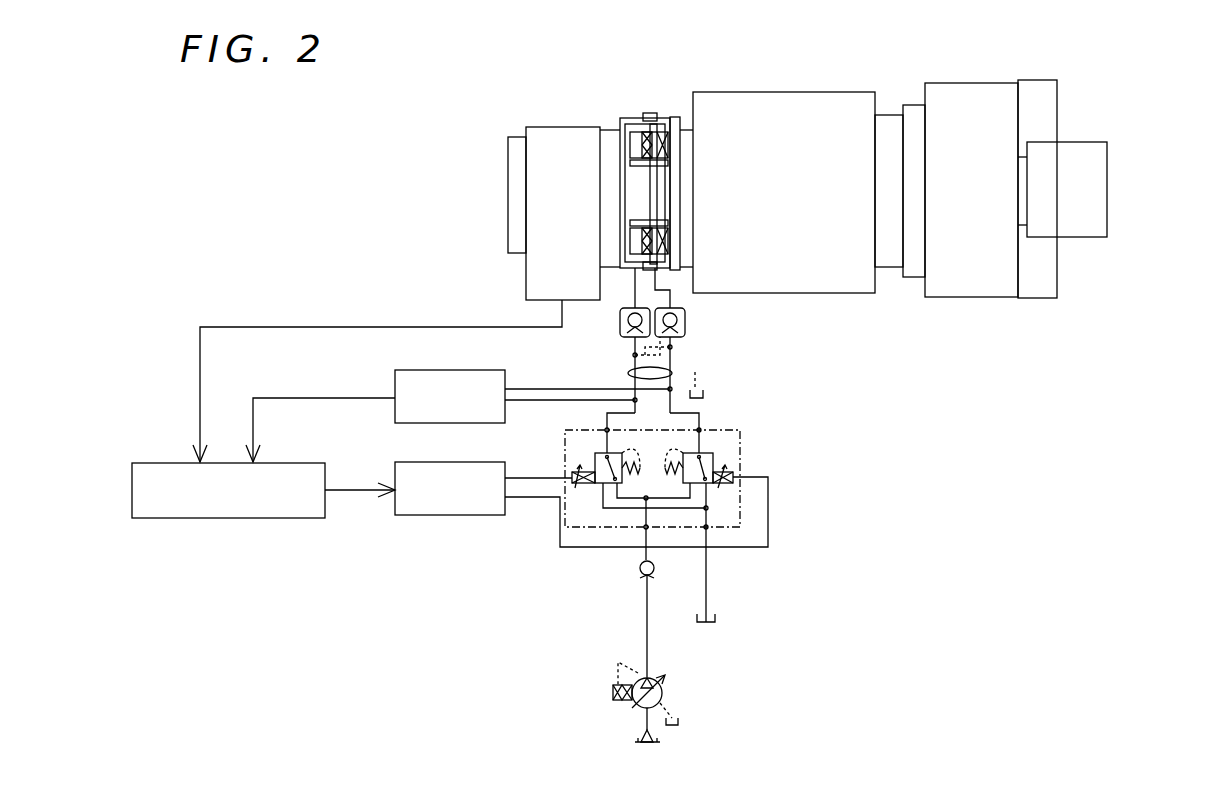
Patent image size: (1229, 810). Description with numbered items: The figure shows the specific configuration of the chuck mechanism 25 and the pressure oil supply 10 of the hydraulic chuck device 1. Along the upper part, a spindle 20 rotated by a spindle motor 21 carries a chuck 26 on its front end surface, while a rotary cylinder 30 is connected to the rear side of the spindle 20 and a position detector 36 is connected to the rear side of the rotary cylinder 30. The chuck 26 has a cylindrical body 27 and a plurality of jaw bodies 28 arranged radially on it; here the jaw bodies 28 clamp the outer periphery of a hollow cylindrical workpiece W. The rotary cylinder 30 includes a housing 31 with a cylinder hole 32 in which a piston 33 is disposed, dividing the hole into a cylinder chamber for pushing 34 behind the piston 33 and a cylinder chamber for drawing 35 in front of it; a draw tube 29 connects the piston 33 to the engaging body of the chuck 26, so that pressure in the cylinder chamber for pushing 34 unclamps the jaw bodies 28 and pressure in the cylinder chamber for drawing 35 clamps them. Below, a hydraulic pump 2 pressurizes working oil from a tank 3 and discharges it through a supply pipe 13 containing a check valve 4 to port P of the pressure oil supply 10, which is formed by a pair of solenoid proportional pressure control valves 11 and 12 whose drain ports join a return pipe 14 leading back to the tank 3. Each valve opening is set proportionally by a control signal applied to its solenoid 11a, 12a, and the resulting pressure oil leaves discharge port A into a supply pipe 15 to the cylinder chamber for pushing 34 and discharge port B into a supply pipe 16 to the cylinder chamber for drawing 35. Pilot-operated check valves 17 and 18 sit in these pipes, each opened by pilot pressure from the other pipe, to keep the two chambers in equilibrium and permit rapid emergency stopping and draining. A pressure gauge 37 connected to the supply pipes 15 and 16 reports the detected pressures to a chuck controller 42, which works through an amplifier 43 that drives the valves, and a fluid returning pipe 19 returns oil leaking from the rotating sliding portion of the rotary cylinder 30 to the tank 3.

The hydraulic chuck device 1 is at (277, 159).
The hydraulic pump 2 is at (663, 693).
The tank 3 is at (703, 395).
The check valve 4 is at (640, 568).
The pressure oil supply 10 is at (669, 486).
The solenoid proportional pressure control valve 11 is at (577, 483).
The solenoid 11a is at (580, 472).
The solenoid proportional pressure control valve 12 is at (740, 482).
The solenoid 12a is at (726, 472).
The supply pipe 13 is at (646, 608).
The return pipe 14 is at (706, 575).
The supply pipe 15 is at (626, 412).
The supply pipe 16 is at (675, 400).
The pilot-operated check valve 17 is at (620, 322).
The pilot-operated check valve 18 is at (690, 332).
The fluid returning pipe 19 is at (690, 376).
The spindle 20 is at (890, 116).
The spindle motor 21 is at (788, 92).
The chuck mechanism 25 is at (1125, 101).
The chuck 26 is at (1003, 305).
The body 27 is at (945, 297).
The jaw bodies 28 is at (1056, 95).
The draw tube 29 is at (664, 170).
The rotary cylinder 30 is at (651, 173).
The housing 31 is at (637, 118).
The cylinder hole 32 is at (652, 118).
The piston 33 is at (668, 240).
The cylinder chamber for pushing 34 is at (636, 243).
The cylinder chamber for drawing 35 is at (650, 241).
The position detector 36 is at (546, 130).
The pressure gauge 37 is at (450, 370).
The chuck controller 42 is at (220, 518).
The amplifier 43 is at (458, 515).
The workpiece W is at (1107, 180).